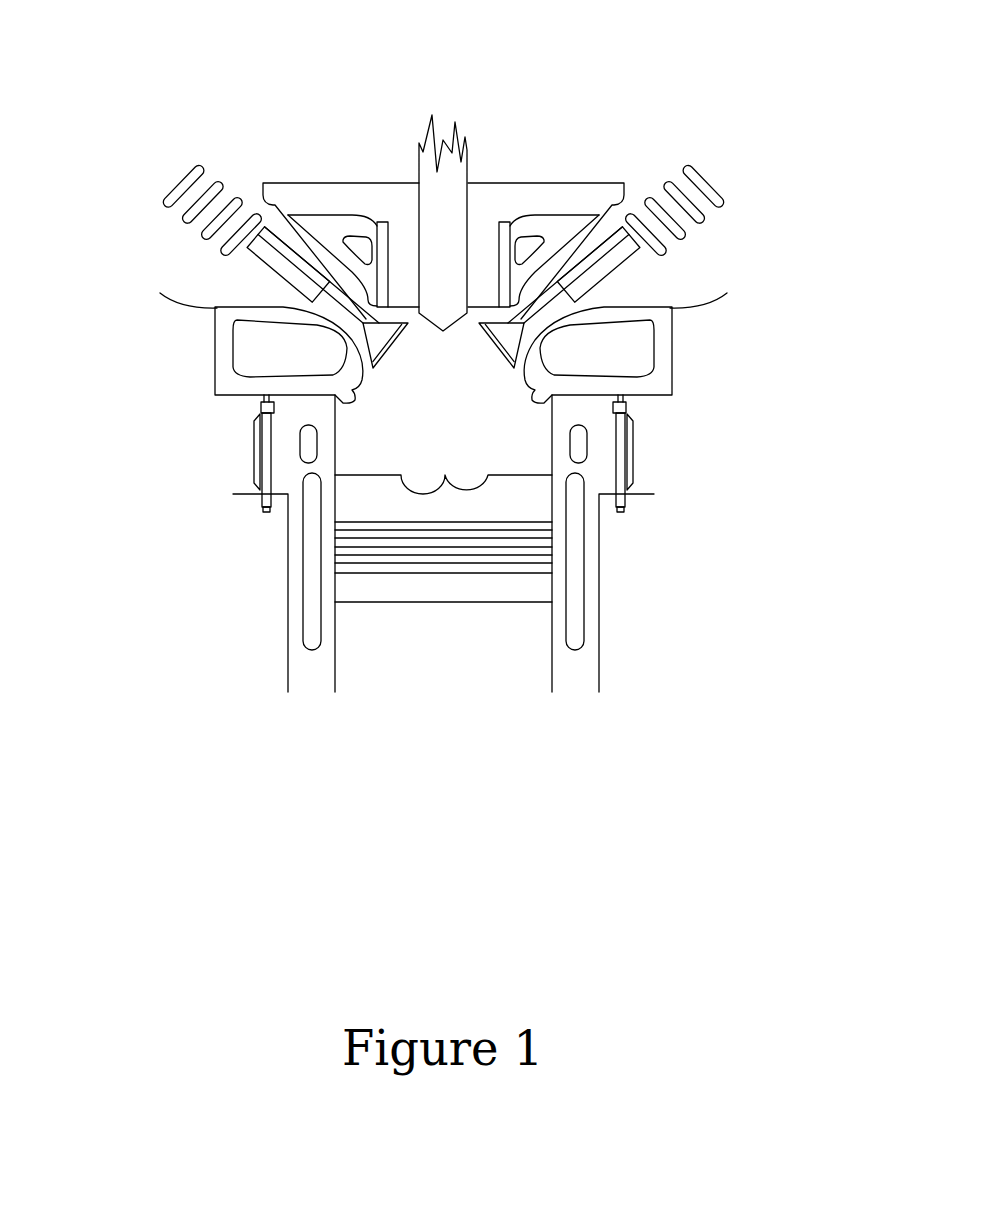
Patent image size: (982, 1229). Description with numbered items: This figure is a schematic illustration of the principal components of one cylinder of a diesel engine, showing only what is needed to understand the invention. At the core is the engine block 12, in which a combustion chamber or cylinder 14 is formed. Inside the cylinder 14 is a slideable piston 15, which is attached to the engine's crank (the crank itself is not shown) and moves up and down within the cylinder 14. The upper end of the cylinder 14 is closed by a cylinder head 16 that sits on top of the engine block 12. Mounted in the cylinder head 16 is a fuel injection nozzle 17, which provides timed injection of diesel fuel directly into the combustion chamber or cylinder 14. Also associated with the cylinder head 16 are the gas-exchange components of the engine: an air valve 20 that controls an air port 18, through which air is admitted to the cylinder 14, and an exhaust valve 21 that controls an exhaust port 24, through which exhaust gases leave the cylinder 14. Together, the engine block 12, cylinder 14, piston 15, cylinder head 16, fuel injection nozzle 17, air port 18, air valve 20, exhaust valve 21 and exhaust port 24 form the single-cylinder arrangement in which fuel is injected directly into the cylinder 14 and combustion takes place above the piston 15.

The engine block 12 is at (287, 587).
The combustion chamber or cylinder 14 is at (333, 643).
The piston 15 is at (462, 602).
The cylinder head 16 is at (577, 183).
The fuel injection nozzle 17 is at (417, 162).
The air port 18 is at (181, 248).
The air valve 20 is at (262, 265).
The exhaust valve 21 is at (640, 271).
The exhaust port 24 is at (693, 283).